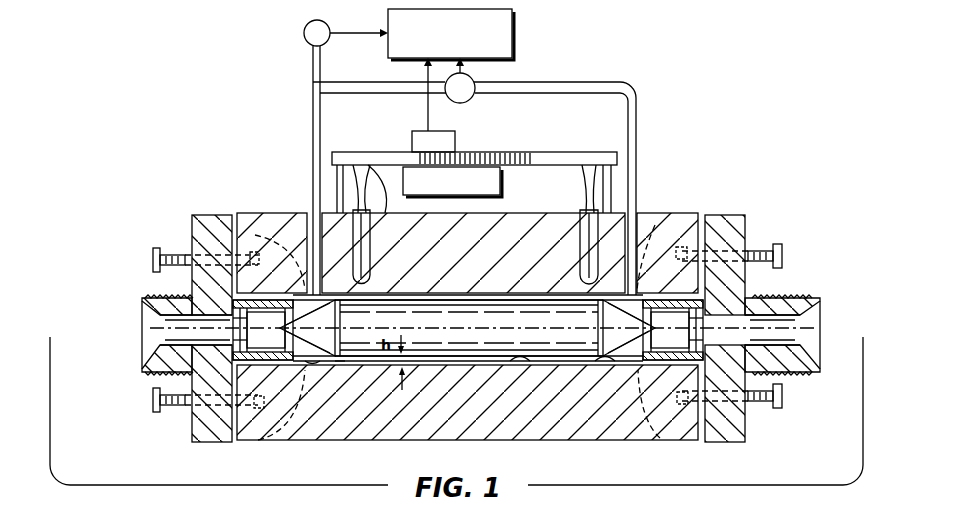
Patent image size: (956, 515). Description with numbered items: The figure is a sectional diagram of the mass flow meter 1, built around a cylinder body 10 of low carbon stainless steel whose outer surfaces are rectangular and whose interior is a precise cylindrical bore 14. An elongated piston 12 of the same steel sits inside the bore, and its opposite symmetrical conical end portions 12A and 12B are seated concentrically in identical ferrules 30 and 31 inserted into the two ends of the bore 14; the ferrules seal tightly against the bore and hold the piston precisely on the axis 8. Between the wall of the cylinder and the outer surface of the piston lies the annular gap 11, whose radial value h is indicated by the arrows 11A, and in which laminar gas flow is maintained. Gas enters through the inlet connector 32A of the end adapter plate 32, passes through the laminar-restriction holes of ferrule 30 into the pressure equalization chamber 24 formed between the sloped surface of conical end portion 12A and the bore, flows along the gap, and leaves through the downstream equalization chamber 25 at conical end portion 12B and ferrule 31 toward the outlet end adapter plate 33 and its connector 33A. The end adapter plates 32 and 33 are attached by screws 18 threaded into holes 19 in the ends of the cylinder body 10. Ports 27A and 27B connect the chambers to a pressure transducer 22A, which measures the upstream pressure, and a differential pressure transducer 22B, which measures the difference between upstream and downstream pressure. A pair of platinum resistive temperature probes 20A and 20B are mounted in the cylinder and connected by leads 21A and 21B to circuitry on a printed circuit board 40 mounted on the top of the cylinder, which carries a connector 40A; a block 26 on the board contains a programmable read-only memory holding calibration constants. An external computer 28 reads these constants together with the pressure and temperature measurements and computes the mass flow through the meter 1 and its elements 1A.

The mass flow meter 1 is at (180, 449).
The annular flow passage 1A is at (340, 368).
The axis 8 is at (470, 336).
The cylinder body 10 is at (663, 221).
The annular gap 11 is at (482, 292).
The arrows 11A is at (469, 329).
The elongated piston 12 is at (440, 345).
The conical end portion 12A is at (338, 318).
The conical end portion 12B is at (603, 319).
The cylindrical bore 14 is at (520, 363).
The screws 18 is at (154, 255).
The holes 19 is at (686, 405).
The platinum resistive temperature probe 20A is at (371, 266).
The platinum resistive temperature probe 20B is at (580, 273).
The leads 21A is at (372, 214).
The leads 21B is at (574, 181).
The pressure transducer 22A is at (304, 28).
The differential pressure transducer 22B is at (473, 98).
The pressure equalization chamber 24 is at (325, 366).
The equalization chamber 25 is at (604, 363).
The block 26 is at (503, 184).
The port 27A is at (311, 133).
The port 27B is at (638, 142).
The external computer 28 is at (515, 31).
The ferrule 30 is at (272, 363).
The ferrule 31 is at (666, 363).
The end adapter plate 32 is at (212, 224).
The inlet connector 32A is at (158, 297).
The end adapter plate 33 is at (728, 220).
The outlet boss 33A is at (806, 297).
The printed circuit board 40 is at (565, 156).
The connector 40A is at (456, 140).